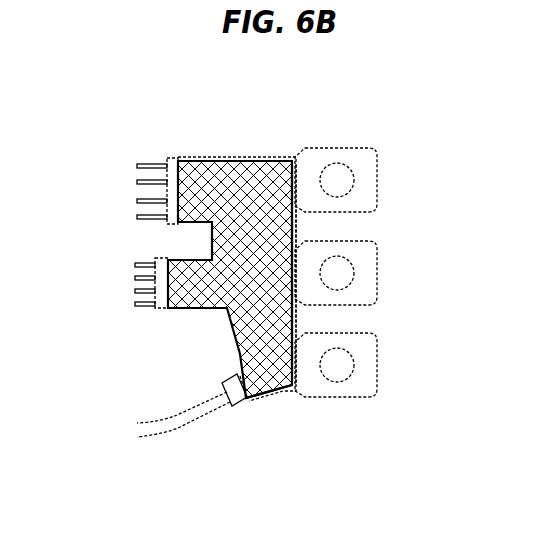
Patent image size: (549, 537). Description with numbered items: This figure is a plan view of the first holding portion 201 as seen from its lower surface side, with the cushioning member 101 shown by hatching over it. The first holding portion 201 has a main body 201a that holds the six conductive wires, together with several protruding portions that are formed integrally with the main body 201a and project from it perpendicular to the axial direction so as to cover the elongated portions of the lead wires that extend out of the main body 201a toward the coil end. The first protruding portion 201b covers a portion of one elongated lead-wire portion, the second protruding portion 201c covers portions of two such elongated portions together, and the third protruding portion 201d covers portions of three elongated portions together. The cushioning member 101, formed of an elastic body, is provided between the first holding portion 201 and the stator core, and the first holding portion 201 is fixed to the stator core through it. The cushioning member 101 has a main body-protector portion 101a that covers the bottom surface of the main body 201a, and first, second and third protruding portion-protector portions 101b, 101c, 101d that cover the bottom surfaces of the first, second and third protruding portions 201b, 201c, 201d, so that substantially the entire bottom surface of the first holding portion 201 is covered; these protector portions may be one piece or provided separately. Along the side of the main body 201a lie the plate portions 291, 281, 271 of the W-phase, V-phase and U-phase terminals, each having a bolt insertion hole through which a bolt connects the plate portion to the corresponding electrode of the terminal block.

The cushioning member 101 is at (222, 170).
The first holding portion 201 is at (267, 162).
The main body-protector portion 101a is at (287, 235).
The main body 201a is at (292, 322).
The first protruding portion-protector portion 101b is at (258, 398).
The first protruding portion 201b is at (252, 402).
The second protruding portion-protector portion 101c is at (182, 282).
The second protruding portion 201c is at (177, 310).
The third protruding portion-protector portion 101d is at (177, 192).
The third protruding portion 201d is at (192, 160).
The plate portion 271 is at (375, 380).
The plate portion 281 is at (375, 283).
The plate portion 291 is at (375, 182).